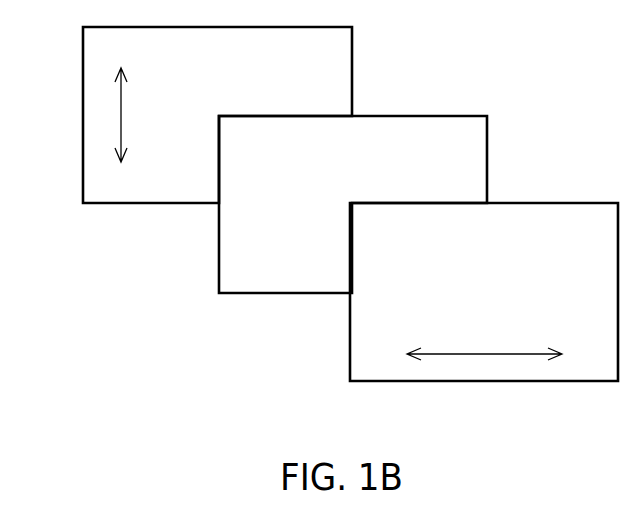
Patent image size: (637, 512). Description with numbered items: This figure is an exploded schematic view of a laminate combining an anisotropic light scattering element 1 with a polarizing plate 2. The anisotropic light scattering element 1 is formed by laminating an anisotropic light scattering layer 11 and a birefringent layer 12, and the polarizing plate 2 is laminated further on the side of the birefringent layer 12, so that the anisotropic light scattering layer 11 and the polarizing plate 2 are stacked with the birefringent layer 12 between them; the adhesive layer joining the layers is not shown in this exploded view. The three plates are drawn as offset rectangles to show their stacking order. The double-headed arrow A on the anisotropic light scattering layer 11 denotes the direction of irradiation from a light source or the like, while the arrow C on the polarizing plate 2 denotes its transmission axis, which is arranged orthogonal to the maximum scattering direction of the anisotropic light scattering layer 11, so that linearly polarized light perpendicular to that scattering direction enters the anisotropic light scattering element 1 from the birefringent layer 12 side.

The anisotropic light scattering element 1 is at (418, 236).
The polarizing plate 2 is at (320, 74).
The anisotropic light scattering layer 11 is at (484, 266).
The birefringent layer 12 is at (462, 139).
The direction of irradiation A is at (483, 354).
The transmission axis C is at (120, 110).